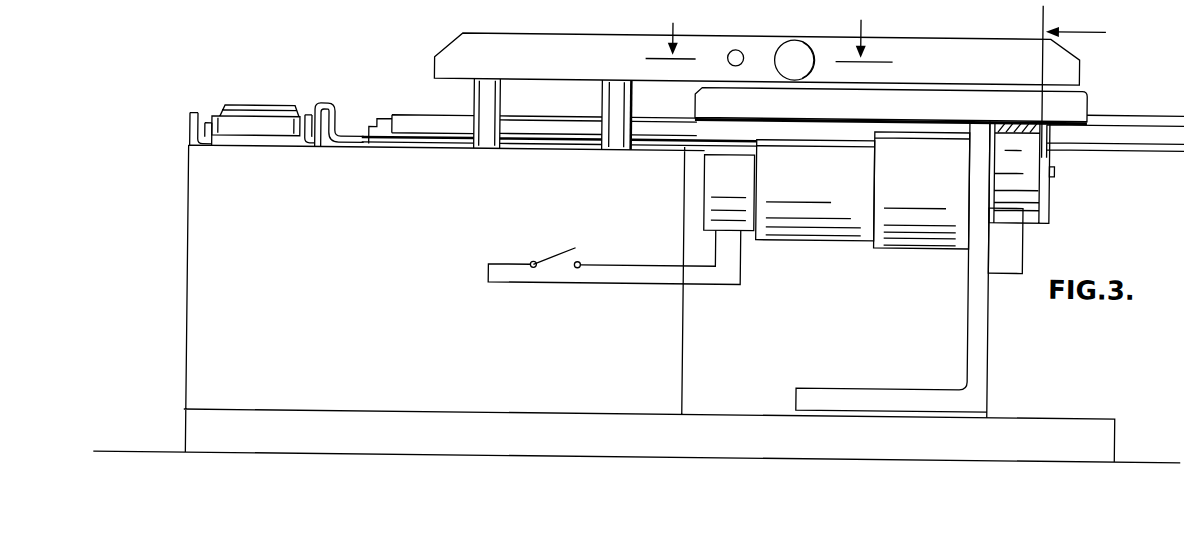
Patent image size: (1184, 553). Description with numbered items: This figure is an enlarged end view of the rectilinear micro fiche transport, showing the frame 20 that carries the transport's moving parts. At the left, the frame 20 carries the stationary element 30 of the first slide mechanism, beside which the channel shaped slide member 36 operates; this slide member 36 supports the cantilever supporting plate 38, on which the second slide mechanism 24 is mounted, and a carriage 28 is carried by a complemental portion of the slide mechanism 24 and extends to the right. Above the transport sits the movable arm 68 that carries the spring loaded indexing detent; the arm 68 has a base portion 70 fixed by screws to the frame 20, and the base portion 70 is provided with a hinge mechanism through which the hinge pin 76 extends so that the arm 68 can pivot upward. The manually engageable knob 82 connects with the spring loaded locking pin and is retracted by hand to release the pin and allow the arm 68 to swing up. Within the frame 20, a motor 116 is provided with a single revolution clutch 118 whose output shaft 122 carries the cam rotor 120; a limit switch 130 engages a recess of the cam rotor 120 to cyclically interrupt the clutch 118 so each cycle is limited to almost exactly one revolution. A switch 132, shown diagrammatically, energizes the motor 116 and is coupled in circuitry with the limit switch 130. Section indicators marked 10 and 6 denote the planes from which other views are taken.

The frame 20 is at (176, 291).
The slide mechanism 24 is at (375, 128).
The carriage 28 is at (1150, 120).
The stationary element 30 is at (184, 120).
The channel shaped slide member 36 is at (260, 120).
The cantilever supporting plate 38 is at (320, 104).
The movable arm 68 is at (982, 36).
The base portion 70 is at (518, 55).
The hinge pin 76 is at (733, 48).
The manually engageable knob 82 is at (793, 50).
The motor 116 is at (823, 218).
The single revolution clutch 118 is at (930, 216).
The cam rotor 120 is at (1038, 206).
The shaft 122 is at (1053, 172).
The limit switch 130 is at (1015, 260).
The switch 132 is at (550, 246).
The section line 10- 10 is at (768, 32).
The section line 6- 6 is at (1073, 97).